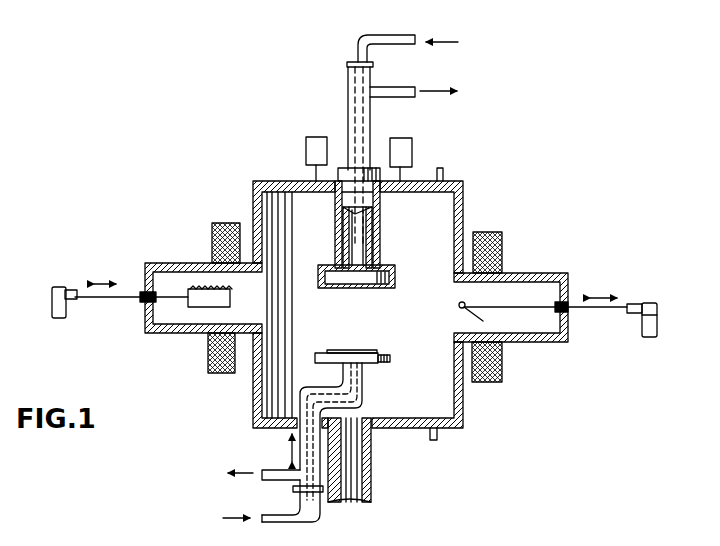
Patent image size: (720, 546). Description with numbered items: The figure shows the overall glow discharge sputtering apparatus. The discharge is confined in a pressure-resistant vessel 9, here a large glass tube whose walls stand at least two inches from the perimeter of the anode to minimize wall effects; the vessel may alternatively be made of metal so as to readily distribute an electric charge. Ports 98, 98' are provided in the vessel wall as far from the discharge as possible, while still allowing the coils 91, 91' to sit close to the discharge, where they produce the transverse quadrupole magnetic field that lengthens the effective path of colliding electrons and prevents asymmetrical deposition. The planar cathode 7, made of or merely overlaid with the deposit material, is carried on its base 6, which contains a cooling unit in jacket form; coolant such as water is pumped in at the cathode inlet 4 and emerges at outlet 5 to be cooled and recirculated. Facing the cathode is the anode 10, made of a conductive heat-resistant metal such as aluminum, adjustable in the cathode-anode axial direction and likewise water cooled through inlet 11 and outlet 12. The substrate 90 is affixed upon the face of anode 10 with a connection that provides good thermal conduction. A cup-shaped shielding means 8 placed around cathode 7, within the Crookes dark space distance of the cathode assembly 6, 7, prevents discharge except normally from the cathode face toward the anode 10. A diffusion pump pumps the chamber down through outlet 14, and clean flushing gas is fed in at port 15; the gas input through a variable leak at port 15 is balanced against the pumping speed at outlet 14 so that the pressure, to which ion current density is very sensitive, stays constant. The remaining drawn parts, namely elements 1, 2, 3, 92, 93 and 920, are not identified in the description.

The gas inlet pipe 1 is at (444, 173).
The measuring device 2 is at (402, 138).
The measuring device 3 is at (317, 137).
The cathode inlet 4 is at (390, 35).
The outlet 5 is at (387, 88).
The base of the cathode 6 is at (348, 90).
The cathode 7 is at (396, 278).
The shielding means 8 is at (380, 240).
The vessel 9 is at (253, 190).
The anode 10 is at (390, 359).
The substrate 90 is at (362, 352).
The coil 91 is at (224, 288).
The coil 91' is at (499, 297).
The pivot member 92 is at (460, 307).
The transfer member 93 is at (230, 297).
The port 98 is at (203, 287).
The port 98' is at (511, 297).
The push rod knob 920 is at (657, 326).
The inlet 11 is at (268, 523).
The outlet 12 is at (268, 481).
The outlet 14 is at (372, 483).
The port 15 is at (438, 437).